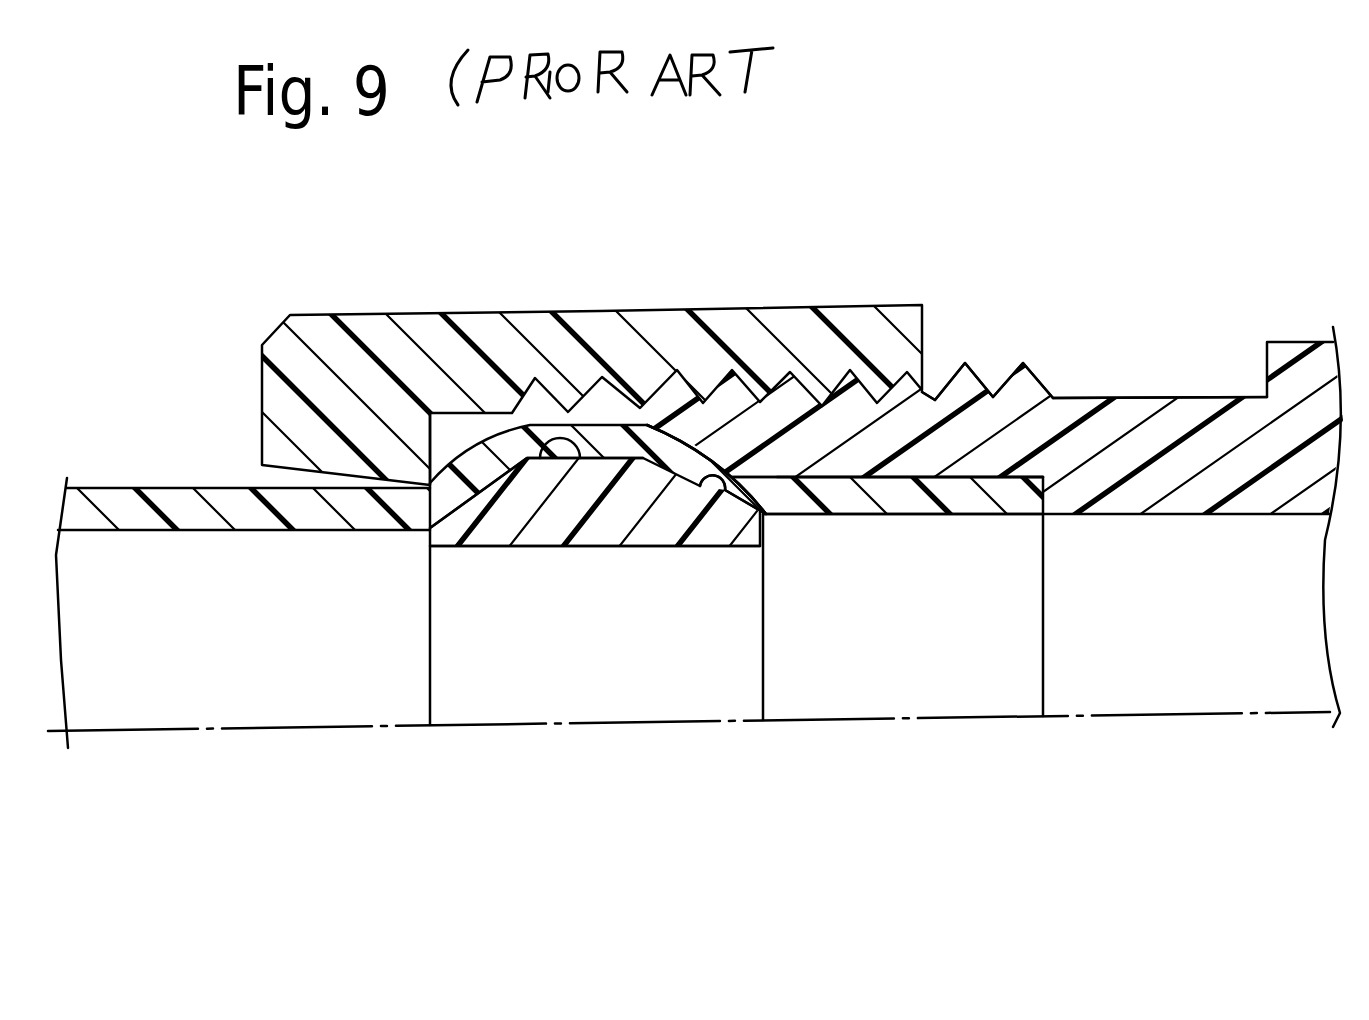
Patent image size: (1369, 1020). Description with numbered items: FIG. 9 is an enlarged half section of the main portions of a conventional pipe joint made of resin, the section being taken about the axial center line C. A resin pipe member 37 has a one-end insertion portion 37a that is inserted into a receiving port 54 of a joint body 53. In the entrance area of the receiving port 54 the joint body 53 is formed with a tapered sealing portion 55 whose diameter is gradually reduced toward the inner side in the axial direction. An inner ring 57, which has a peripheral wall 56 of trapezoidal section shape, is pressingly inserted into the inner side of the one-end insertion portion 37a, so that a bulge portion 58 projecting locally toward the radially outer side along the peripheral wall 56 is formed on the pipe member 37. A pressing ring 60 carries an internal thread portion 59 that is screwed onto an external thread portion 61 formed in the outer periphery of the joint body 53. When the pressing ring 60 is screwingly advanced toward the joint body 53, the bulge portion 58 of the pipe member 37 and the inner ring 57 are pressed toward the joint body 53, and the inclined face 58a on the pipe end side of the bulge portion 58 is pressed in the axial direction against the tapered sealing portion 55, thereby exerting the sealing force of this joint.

The pipe member 37 is at (112, 484).
The one-end insertion portion 37a is at (972, 513).
The joint body 53 is at (1155, 393).
The receiving port 54 is at (905, 423).
The tapered sealing portion 55 is at (713, 507).
The peripheral wall 56 is at (532, 450).
The inner ring 57 is at (592, 556).
The bulge portion 58 is at (602, 432).
The inclined face 58a is at (720, 455).
The internal thread portion 59 is at (811, 480).
The pressing ring 60 is at (375, 312).
The external thread portion 61 is at (982, 392).
The center line C is at (1267, 717).